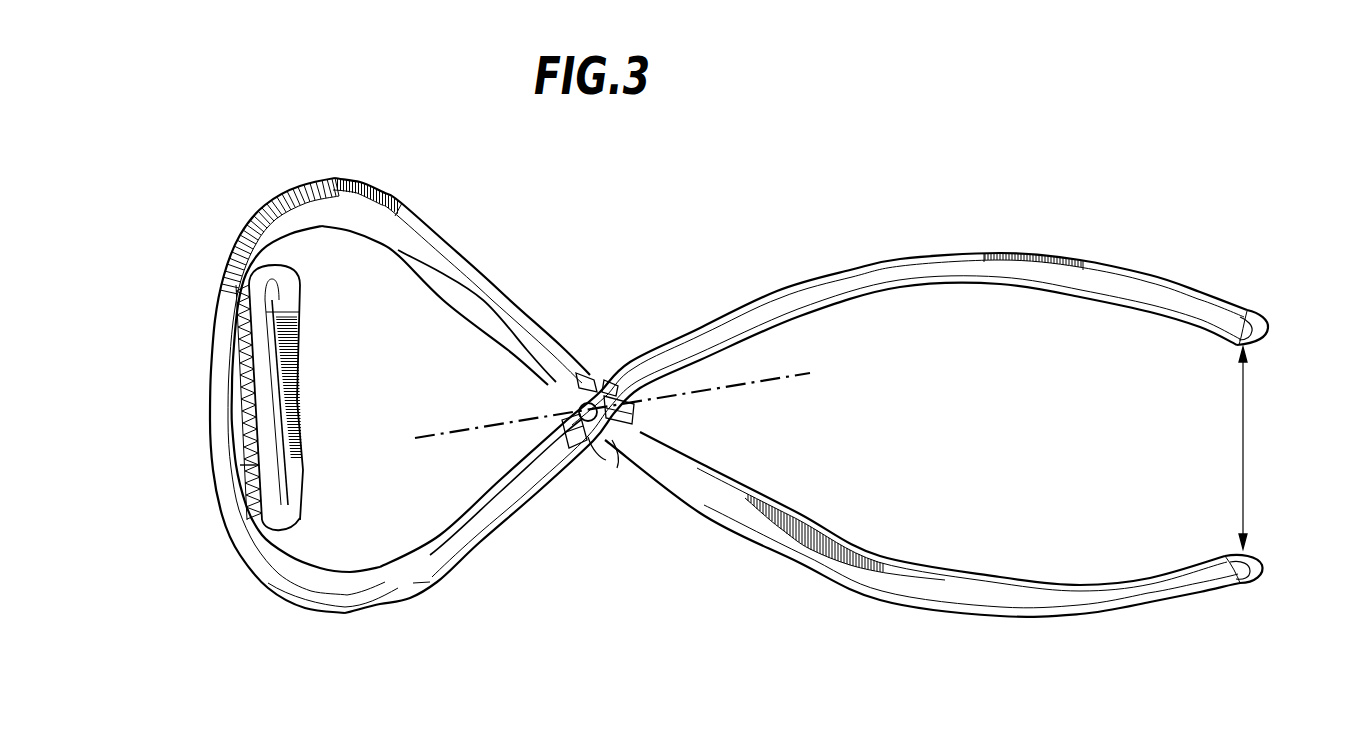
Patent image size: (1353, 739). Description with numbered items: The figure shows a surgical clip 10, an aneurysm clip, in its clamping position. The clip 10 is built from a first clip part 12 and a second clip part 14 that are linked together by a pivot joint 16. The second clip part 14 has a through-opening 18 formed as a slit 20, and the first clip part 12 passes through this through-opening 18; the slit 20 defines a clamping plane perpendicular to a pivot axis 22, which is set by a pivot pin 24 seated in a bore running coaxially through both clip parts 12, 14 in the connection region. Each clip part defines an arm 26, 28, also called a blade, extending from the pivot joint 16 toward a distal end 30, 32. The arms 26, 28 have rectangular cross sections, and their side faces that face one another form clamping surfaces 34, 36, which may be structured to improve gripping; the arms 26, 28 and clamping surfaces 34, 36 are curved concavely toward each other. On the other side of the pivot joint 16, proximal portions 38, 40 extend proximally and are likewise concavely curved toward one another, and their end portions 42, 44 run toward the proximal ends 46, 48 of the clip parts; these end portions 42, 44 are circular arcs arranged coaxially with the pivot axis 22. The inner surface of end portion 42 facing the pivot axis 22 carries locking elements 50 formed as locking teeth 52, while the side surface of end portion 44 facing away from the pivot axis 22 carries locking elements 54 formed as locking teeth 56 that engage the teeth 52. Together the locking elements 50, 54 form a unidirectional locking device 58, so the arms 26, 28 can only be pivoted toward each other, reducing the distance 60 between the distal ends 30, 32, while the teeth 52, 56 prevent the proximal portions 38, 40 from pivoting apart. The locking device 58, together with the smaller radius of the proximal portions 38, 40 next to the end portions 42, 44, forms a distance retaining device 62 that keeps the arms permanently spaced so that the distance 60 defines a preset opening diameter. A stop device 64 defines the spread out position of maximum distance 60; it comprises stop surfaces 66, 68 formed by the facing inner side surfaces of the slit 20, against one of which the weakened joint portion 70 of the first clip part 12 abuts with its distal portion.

The surgical clip 10 is at (690, 244).
The first clip part 12 is at (918, 252).
The second clip part 14 is at (866, 596).
The pivot joint 16 is at (543, 431).
The through-opening 18 is at (634, 410).
The slit 20 is at (577, 403).
The pivot axis 22 is at (455, 436).
The pivot pin 24 is at (608, 442).
The arm 26 is at (1038, 278).
The arm 28 is at (1062, 606).
The distal end 30 is at (1260, 320).
The distal end 32 is at (1256, 570).
The clamping surface 34 is at (975, 296).
The clamping surface 36 is at (936, 574).
The proximal portion 38 is at (352, 181).
The proximal portion 40 is at (362, 600).
The end portion 42 is at (224, 374).
The end portion 44 is at (282, 376).
The proximal end 46 is at (252, 542).
The proximal end 48 is at (290, 277).
The locking elements 50 is at (284, 290).
The locking teeth 52 is at (280, 322).
The locking elements 54 is at (238, 434).
The locking teeth 56 is at (240, 470).
The locking device 58 is at (216, 508).
The distance 60 is at (1244, 470).
The distance retaining device 62 is at (212, 302).
The stop device 64 is at (608, 371).
The stop surface 66 is at (586, 376).
The stop surface 68 is at (632, 420).
The weakened joint portion 70 is at (590, 447).